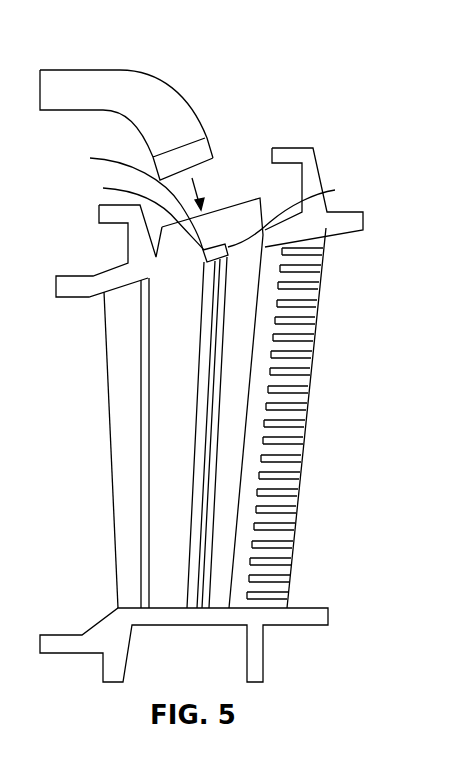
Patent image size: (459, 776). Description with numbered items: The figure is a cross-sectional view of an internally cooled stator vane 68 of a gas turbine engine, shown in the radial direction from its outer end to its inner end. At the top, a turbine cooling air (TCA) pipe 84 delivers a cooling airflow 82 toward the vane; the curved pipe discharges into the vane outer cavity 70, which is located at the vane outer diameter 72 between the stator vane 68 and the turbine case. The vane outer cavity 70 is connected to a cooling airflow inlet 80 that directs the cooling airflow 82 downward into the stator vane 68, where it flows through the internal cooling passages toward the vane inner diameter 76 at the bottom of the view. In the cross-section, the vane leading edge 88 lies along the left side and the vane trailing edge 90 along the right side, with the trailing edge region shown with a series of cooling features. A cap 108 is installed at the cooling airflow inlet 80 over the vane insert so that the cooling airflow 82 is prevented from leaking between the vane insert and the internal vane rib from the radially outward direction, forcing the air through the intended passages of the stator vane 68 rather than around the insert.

The stator vane 68 is at (142, 443).
The vane outer cavity 70 is at (259, 146).
The vane outer diameter 72 is at (131, 199).
The vane inner diameter 76 is at (188, 545).
The cooling airflow inlet 80 is at (139, 213).
The cooling airflow 82 is at (192, 180).
The turbine cooling air pipe 84 is at (80, 80).
The vane leading edge 88 is at (107, 372).
The vane trailing edge 90 is at (307, 397).
The cap 108 is at (306, 213).